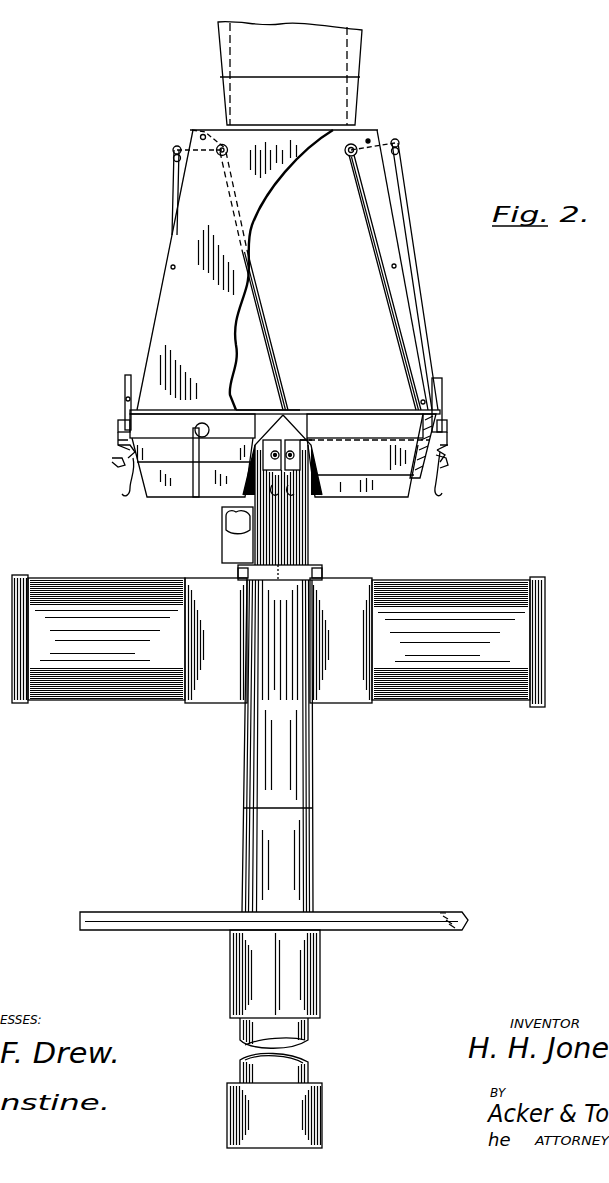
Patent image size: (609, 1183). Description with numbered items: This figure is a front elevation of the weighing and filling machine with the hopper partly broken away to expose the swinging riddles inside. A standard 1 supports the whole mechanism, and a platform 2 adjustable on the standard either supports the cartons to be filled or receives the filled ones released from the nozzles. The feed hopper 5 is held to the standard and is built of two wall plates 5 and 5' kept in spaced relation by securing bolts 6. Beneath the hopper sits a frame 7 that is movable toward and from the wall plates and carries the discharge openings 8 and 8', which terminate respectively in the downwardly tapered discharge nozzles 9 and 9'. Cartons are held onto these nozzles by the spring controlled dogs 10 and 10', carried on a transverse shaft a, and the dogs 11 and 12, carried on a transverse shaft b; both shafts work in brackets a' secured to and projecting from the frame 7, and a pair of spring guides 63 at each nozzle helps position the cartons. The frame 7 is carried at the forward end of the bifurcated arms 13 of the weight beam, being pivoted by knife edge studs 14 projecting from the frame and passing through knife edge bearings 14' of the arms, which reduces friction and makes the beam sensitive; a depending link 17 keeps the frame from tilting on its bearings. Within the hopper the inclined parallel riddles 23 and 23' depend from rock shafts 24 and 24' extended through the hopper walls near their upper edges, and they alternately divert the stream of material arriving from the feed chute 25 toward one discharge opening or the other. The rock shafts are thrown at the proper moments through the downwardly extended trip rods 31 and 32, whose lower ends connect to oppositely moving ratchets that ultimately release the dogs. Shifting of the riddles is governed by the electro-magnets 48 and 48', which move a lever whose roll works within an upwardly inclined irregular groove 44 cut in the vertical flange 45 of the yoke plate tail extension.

The standard 1 is at (300, 856).
The platform 2 is at (372, 921).
The feed hopper 5 is at (282, 270).
The hopper wall plate 5' is at (281, 270).
The securing bolts 6 is at (171, 267).
The frame 7 is at (462, 410).
The discharge opening 8 is at (285, 398).
The discharge opening 8' is at (268, 397).
The discharge nozzle 9 is at (365, 478).
The discharge nozzle 9' is at (192, 479).
The spring controlled dog 10 is at (468, 445).
The spring controlled dog 10' is at (323, 449).
The spring controlled dog 11 is at (268, 459).
The spring controlled dog 12 is at (120, 460).
The bifurcated arms 13 is at (125, 380).
The knife edge studs 14 is at (293, 417).
The knife edge bearings 14' is at (296, 416).
The depending link 17 is at (282, 572).
The riddle 23 is at (385, 282).
The riddle 23' is at (265, 281).
The rock shaft 24 is at (370, 133).
The rock shaft 24' is at (202, 130).
The feed chute 25 is at (290, 73).
The trip rod 31 is at (401, 184).
The trip rod 32 is at (174, 184).
The irregular groove 44 is at (236, 522).
The vertical flange 45 is at (228, 555).
The electro-magnet 48 is at (427, 629).
The electro-magnet 48' is at (129, 627).
The spring guides 63 is at (128, 488).
The transverse shaft a is at (448, 467).
The brackets a' is at (270, 433).
The transverse shaft b is at (113, 462).